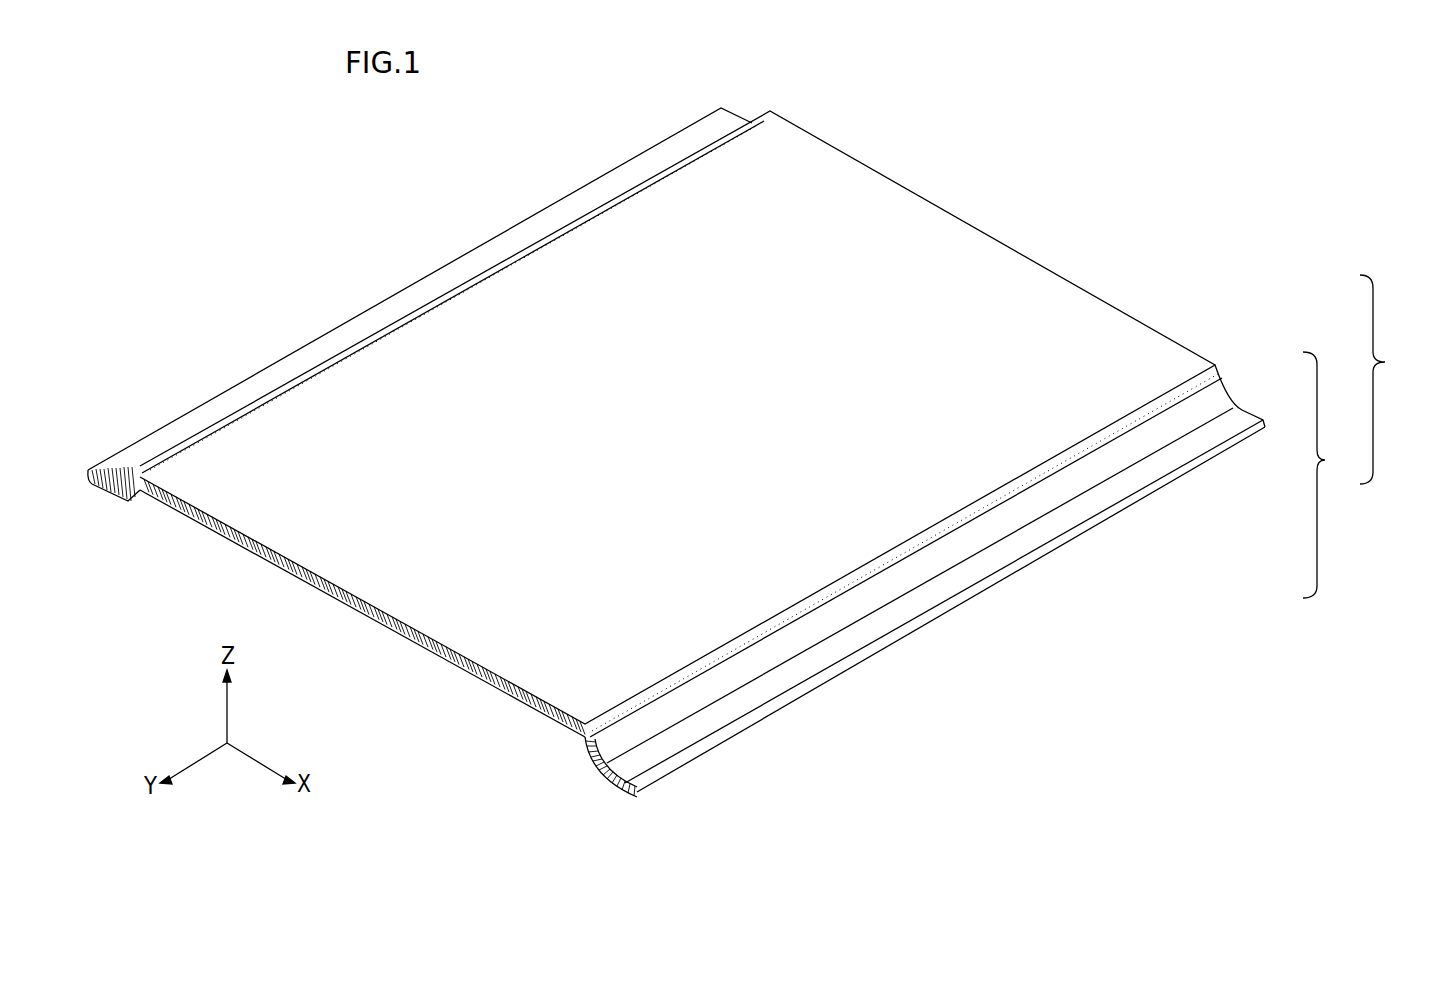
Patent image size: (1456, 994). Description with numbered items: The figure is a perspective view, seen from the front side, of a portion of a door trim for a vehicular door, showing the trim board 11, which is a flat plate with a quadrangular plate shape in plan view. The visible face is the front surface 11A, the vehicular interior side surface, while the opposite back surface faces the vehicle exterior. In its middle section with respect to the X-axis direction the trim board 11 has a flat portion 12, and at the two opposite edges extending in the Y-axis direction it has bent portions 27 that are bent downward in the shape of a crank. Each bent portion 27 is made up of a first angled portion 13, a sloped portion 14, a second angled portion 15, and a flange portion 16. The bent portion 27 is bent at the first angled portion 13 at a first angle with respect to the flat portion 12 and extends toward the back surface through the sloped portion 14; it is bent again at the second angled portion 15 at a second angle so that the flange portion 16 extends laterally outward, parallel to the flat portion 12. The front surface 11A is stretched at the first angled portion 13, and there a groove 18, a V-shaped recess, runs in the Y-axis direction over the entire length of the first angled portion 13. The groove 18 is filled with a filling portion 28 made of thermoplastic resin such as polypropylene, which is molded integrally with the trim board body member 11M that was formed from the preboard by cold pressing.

The trim board 11 is at (880, 167).
The front surface 11A is at (913, 260).
The trim board body member 11M is at (1395, 379).
The flat portion 12 is at (1170, 360).
The bent portion 27 is at (969, 574).
The first angled portion 13 is at (1215, 367).
The sloped portion 14 is at (1195, 412).
The second angled portion 15 is at (1150, 455).
The flange portion 16 is at (1097, 500).
The groove 18 is at (773, 620).
The filling portion 28 is at (853, 580).